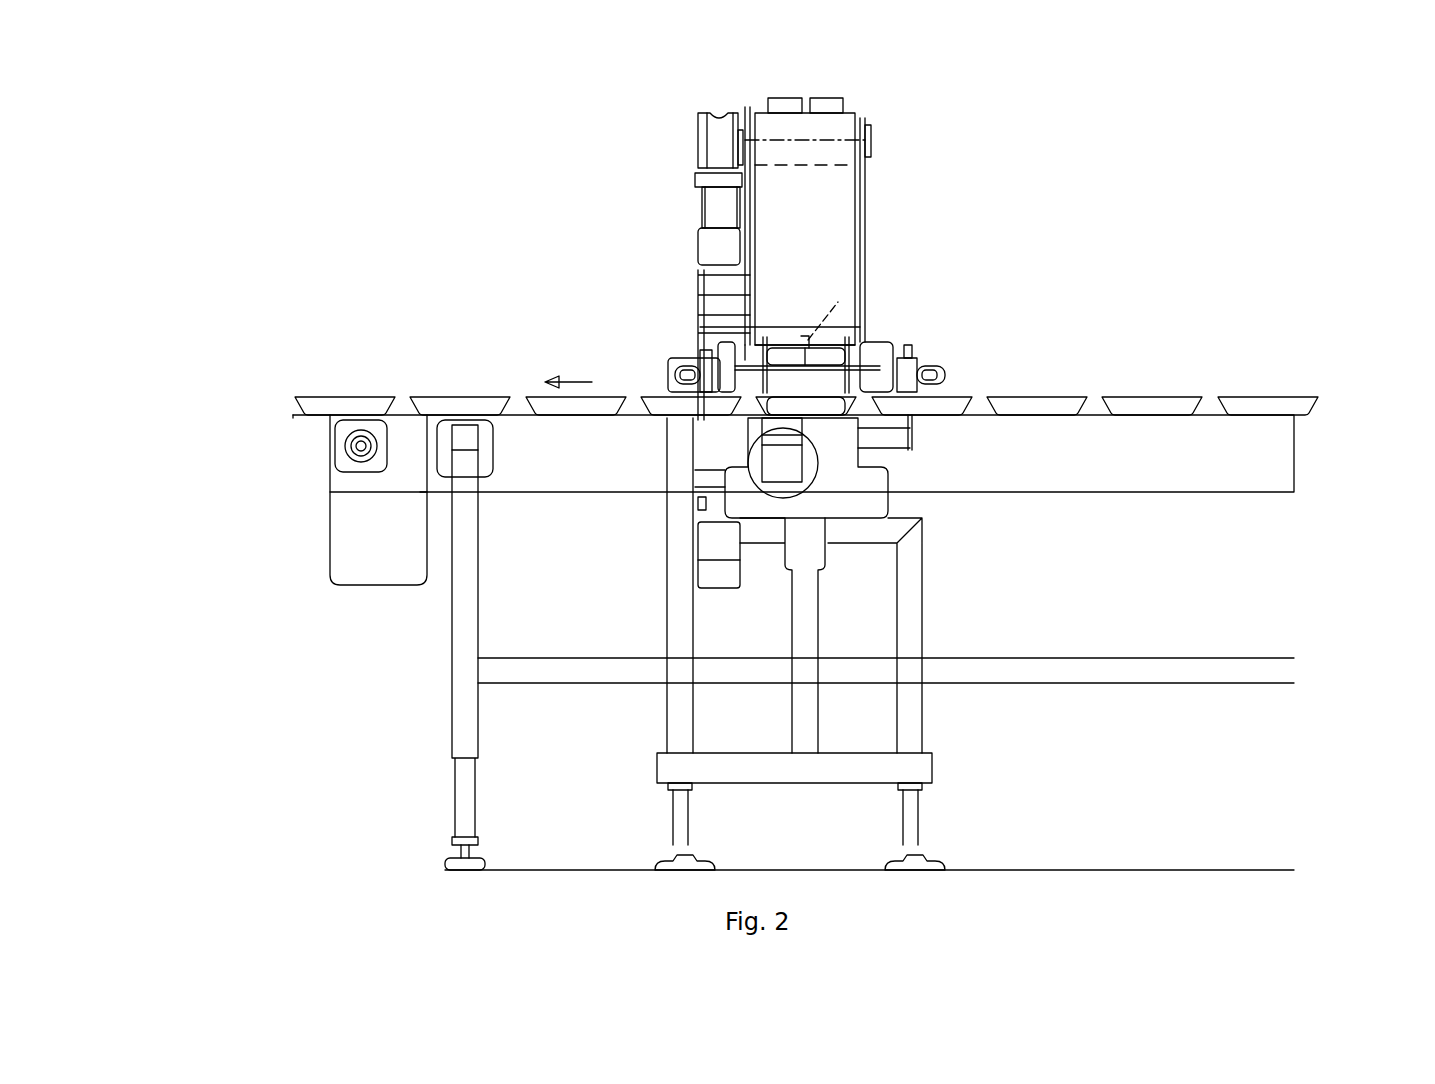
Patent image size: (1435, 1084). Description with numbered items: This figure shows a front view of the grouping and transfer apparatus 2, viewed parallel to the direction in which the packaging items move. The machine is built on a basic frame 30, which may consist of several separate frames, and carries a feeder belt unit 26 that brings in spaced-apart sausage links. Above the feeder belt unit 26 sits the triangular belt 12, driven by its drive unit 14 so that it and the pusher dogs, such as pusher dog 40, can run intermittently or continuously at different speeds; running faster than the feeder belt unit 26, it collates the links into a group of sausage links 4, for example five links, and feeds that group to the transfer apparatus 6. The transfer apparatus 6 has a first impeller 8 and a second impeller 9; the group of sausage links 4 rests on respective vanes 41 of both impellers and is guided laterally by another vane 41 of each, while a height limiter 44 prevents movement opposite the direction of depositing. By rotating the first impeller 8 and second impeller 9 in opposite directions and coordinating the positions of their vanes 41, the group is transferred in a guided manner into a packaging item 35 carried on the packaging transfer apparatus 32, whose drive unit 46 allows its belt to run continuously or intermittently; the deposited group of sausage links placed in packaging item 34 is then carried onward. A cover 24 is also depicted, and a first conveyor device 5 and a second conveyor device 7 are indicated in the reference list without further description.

The grouping and transfer apparatus 2 is at (1240, 140).
The group of sausage links 4 is at (797, 356).
The first conveyor device 5 is at (990, 296).
The transfer apparatus 6 is at (900, 334).
The second conveyor device 7 is at (740, 336).
The first impeller 8 is at (878, 345).
The second impeller 9 is at (748, 358).
The triangular belt 12 is at (904, 217).
The drive unit of the triangular belt 14 is at (718, 152).
The cover 24 is at (897, 458).
The feeder belt unit 26 is at (948, 378).
The basic frame 30 is at (436, 708).
The packaging transfer apparatus 32 is at (292, 461).
The group of sausage links placed in packaging item 34 is at (340, 400).
The packaging item 35 is at (1262, 407).
The pusher dog 40 is at (832, 104).
The vane 41 is at (778, 372).
The height limiter 44 is at (855, 341).
The drive unit 46 is at (895, 510).